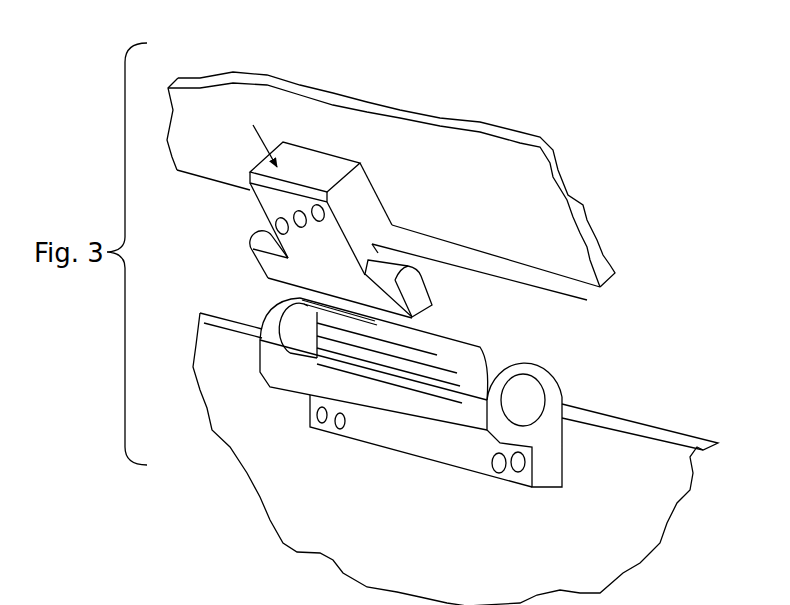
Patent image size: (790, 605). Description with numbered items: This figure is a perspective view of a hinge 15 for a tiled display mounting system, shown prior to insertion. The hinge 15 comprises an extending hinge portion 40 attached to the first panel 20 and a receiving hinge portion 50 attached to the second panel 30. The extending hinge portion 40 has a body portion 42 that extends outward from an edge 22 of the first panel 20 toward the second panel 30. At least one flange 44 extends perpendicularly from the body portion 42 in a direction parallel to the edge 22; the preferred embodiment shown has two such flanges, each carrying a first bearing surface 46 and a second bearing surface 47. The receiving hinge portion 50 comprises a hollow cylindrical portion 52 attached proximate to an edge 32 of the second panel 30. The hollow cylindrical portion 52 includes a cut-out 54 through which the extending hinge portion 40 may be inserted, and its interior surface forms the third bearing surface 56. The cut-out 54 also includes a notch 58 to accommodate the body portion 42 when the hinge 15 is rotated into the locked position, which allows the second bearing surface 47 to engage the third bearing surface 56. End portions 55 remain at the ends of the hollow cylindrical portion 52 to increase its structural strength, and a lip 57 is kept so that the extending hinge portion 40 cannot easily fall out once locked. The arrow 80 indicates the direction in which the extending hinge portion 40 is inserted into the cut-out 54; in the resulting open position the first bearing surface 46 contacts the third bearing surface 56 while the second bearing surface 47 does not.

The hinge 15 is at (667, 186).
The first panel 20 is at (453, 196).
The edge of the first panel 22 is at (213, 181).
The second panel 30 is at (418, 536).
The edge of the second panel 32 is at (689, 433).
The extending hinge portion 40 is at (376, 249).
The body portion 42 is at (264, 221).
The flange 44 is at (253, 261).
The first bearing surface 46 is at (283, 285).
The second bearing surface 47 is at (267, 243).
The receiving hinge portion 50 is at (563, 383).
The hollow cylindrical portion 52 is at (566, 398).
The cut-out 54 is at (472, 372).
The end portion 55 is at (470, 395).
The third bearing surface 56 is at (535, 398).
The lip 57 is at (353, 377).
The notch 58 is at (463, 377).
The arrow 80 is at (267, 143).